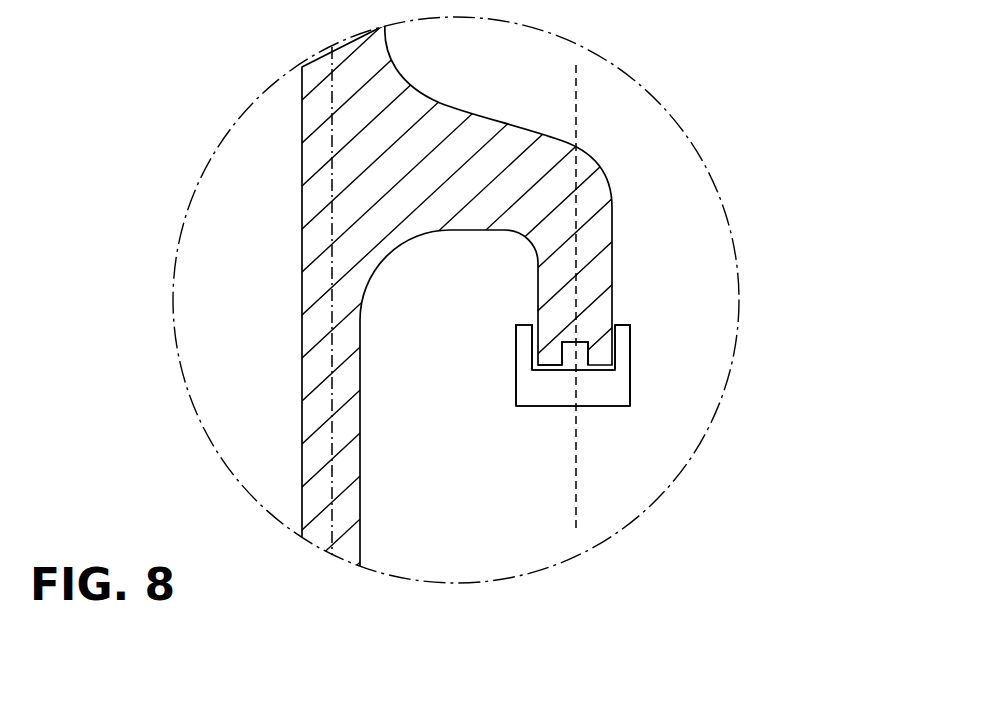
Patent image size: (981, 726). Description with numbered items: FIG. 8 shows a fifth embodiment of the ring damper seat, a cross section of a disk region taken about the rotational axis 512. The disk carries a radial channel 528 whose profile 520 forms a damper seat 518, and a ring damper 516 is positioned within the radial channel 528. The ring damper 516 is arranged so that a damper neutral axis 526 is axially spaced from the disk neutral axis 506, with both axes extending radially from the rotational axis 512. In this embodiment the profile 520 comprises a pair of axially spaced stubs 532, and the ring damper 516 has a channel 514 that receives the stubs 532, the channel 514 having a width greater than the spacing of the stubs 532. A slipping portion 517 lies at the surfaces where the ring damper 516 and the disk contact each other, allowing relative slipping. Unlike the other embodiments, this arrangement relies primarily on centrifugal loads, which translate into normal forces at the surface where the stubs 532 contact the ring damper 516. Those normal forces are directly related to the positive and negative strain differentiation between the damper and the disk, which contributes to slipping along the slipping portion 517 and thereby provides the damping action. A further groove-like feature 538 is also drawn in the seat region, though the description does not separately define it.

The disk neutral axis 506 is at (333, 295).
The rotational axis 512 is at (595, 138).
The channel 514 is at (530, 378).
The ring damper 516 is at (620, 387).
The slipping portion 517 is at (600, 368).
The damper seat 518 is at (535, 355).
The profile 520 is at (620, 342).
The damper neutral axis 526 is at (572, 495).
The radial channel 528 is at (585, 405).
The stubs 532 is at (553, 365).
The groove 538 is at (585, 355).